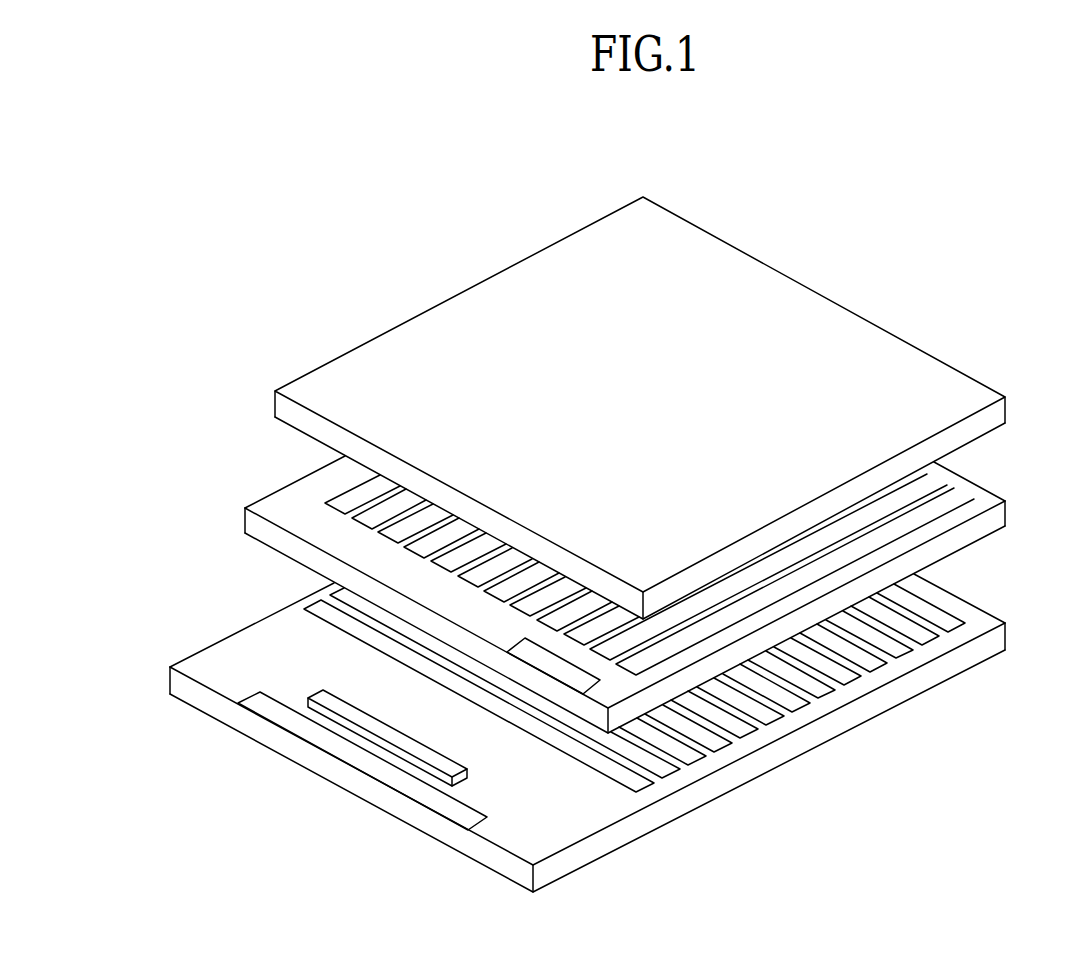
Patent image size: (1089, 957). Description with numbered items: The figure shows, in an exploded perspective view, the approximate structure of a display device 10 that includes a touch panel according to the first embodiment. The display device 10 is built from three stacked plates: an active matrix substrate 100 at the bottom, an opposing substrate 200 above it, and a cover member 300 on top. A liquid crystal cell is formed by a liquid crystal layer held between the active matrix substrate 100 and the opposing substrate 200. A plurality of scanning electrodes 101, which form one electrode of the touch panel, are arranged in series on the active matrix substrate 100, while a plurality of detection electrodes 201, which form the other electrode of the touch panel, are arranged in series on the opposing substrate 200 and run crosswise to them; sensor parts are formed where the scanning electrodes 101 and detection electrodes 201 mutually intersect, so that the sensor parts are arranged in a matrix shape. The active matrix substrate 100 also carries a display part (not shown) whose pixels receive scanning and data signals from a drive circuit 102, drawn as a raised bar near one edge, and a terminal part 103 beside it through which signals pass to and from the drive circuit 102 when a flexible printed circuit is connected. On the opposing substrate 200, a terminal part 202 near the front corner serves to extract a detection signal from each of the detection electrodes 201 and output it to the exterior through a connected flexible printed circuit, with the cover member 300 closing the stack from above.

The display device 10 is at (342, 296).
The active matrix substrate 100 is at (976, 613).
The scanning electrodes 101 is at (893, 652).
The drive circuit 102 is at (466, 772).
The terminal part 103 is at (486, 822).
The opposing substrate 200 is at (973, 489).
The detection electrodes 201 is at (320, 494).
The terminal part 202 is at (503, 645).
The cover member 300 is at (862, 329).